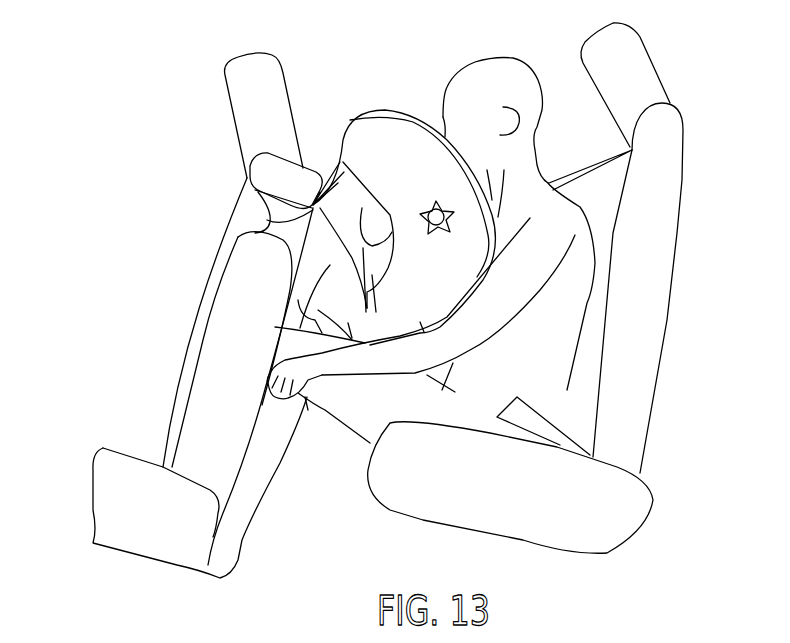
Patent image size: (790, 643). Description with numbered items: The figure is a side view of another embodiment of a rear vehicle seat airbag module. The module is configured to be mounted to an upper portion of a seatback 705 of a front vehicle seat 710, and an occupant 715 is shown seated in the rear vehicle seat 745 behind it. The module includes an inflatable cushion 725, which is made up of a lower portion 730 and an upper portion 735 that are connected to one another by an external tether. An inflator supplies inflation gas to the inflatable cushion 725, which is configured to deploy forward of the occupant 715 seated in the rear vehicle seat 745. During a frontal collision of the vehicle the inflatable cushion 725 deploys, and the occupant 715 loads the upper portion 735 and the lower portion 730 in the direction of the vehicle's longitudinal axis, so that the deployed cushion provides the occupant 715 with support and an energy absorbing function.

The seatback 705 is at (273, 180).
The front vehicle seat 710 is at (103, 440).
The occupant 715 is at (475, 82).
The inflatable cushion 725 is at (440, 85).
The lower portion 730 is at (310, 243).
The upper portion 735 is at (430, 152).
The rear vehicle seat 745 is at (659, 266).